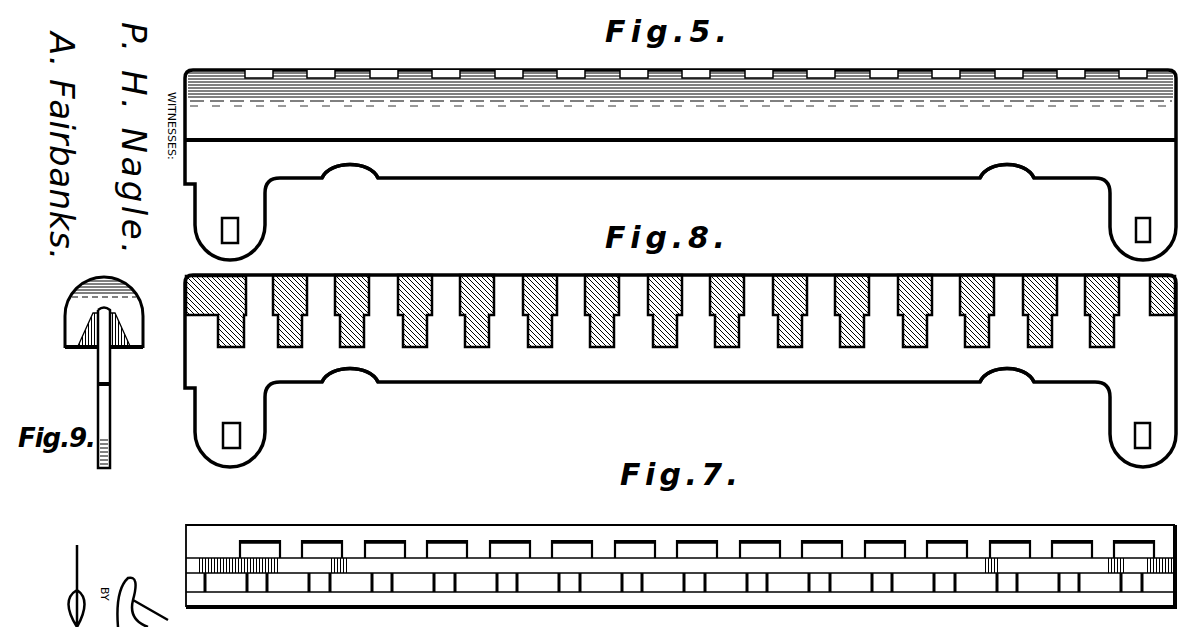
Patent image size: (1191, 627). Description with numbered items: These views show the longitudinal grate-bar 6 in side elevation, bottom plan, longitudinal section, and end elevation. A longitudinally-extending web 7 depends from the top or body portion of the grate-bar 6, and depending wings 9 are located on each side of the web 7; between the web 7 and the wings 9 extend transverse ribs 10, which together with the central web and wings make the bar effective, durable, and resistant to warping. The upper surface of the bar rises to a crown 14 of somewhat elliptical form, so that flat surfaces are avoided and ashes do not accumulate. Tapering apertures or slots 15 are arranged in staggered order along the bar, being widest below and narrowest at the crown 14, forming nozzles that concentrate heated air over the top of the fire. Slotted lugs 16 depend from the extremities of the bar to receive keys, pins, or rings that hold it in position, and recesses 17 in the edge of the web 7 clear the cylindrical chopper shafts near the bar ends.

In FIG. 7, the longitudinal grate-bar 6 is at (851, 540).
In FIG. 9, the longitudinal grate-bar 6 is at (104, 308).
In FIG. 5, the longitudinally-extending web 7 is at (680, 165).
In FIG. 8, the longitudinally-extending web 7 is at (680, 371).
In FIG. 7, the longitudinally-extending web 7 is at (504, 568).
In FIG. 9, the longitudinally-extending web 7 is at (109, 367).
In FIG. 5, the depending wings 9 is at (680, 127).
In FIG. 7, the depending wings 9 is at (427, 535).
In FIG. 9, the depending wings 9 is at (68, 331).
In FIG. 8, the transverse ribs 10 is at (294, 347).
In FIG. 7, the transverse ribs 10 is at (354, 545).
In FIG. 9, the transverse ribs 10 is at (88, 349).
In FIG. 5, the crown 14 is at (534, 74).
In FIG. 8, the crown 14 is at (680, 266).
In FIG. 9, the crown 14 is at (104, 275).
In FIG. 5, the apertures or slots 15 is at (320, 73).
In FIG. 8, the apertures or slots 15 is at (1064, 283).
In FIG. 7, the apertures or slots 15 is at (262, 548).
In FIG. 5, the lugs 16 is at (244, 226).
In FIG. 8, the lugs 16 is at (246, 431).
In FIG. 7, the lugs 16 is at (224, 565).
In FIG. 5, the recesses 17 is at (356, 168).
In FIG. 8, the recesses 17 is at (354, 375).
In FIG. 7, the recesses 17 is at (1010, 565).